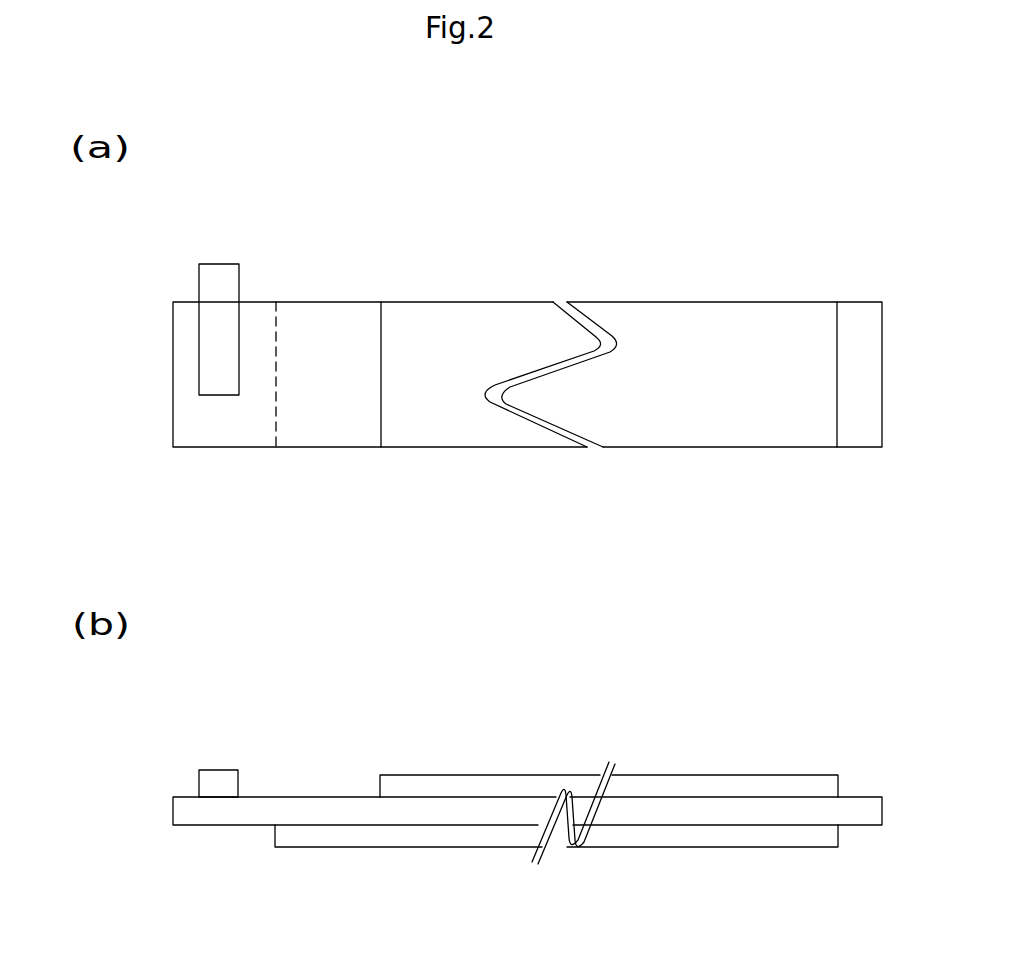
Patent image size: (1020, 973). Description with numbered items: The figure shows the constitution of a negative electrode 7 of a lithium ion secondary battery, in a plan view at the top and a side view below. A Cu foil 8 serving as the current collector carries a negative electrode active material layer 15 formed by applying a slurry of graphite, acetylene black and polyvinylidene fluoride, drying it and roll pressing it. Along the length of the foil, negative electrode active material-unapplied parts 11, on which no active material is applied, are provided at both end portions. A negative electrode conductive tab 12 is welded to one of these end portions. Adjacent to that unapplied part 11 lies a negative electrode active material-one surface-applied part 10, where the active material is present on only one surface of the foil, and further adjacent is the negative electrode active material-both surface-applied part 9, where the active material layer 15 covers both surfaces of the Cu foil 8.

The negative electrode 7 is at (167, 352).
The Cu foil 8 is at (808, 814).
The negative electrode active material-both surface-applied part 9 is at (415, 323).
The negative electrode active material-one surface-applied part 10 is at (332, 428).
The negative electrode active material-unapplied part 11 is at (203, 410).
The negative electrode conductive tab 12 is at (225, 283).
The negative electrode active material layer 15 is at (662, 775).